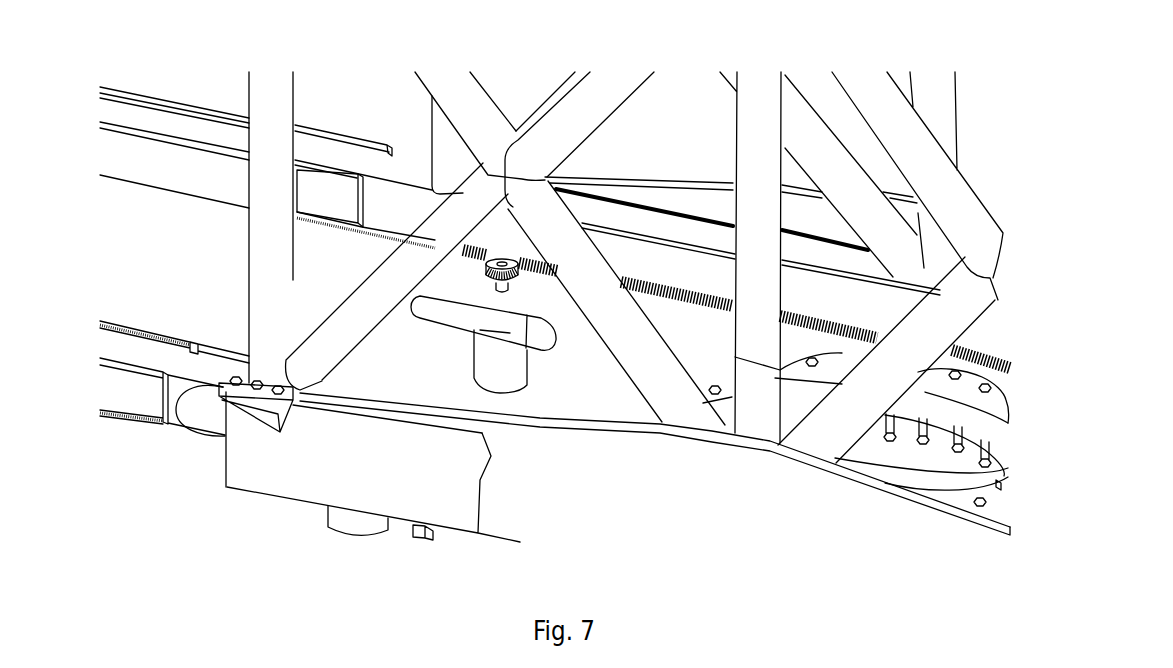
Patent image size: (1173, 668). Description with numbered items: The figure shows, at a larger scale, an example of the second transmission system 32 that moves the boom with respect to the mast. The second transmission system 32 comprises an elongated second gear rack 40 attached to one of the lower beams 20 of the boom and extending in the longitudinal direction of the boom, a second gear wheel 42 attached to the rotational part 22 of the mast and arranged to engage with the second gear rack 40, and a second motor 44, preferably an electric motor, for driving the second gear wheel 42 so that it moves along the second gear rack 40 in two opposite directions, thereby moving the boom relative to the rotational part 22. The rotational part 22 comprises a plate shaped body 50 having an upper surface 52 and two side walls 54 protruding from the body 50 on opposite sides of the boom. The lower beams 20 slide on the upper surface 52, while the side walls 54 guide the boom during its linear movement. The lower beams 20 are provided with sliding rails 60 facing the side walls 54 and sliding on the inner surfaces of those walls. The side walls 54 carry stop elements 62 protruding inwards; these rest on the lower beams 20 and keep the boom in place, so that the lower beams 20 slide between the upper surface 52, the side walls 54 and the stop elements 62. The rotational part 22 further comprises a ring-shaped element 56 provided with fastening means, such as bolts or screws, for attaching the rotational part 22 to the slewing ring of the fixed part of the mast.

The lower beams 20 is at (403, 200).
The rotational part 22 is at (235, 483).
The second transmission system 32 is at (483, 281).
The second gear rack 40 is at (688, 305).
The second gear wheel 42 is at (502, 260).
The second motor 44 is at (497, 365).
The plate shaped body 50 is at (479, 406).
The upper surface 52 is at (591, 390).
The side walls 54 is at (481, 531).
The ring-shaped element 56 is at (968, 423).
The sliding rails 60 is at (217, 440).
The stop elements 62 is at (230, 375).